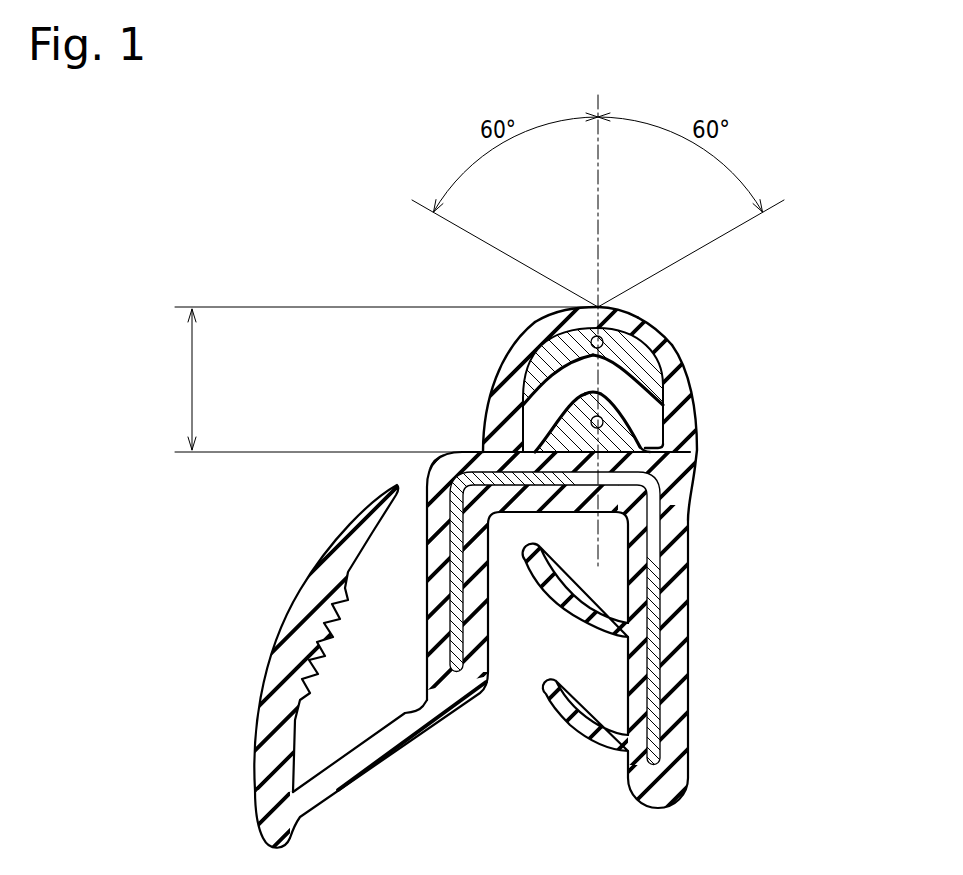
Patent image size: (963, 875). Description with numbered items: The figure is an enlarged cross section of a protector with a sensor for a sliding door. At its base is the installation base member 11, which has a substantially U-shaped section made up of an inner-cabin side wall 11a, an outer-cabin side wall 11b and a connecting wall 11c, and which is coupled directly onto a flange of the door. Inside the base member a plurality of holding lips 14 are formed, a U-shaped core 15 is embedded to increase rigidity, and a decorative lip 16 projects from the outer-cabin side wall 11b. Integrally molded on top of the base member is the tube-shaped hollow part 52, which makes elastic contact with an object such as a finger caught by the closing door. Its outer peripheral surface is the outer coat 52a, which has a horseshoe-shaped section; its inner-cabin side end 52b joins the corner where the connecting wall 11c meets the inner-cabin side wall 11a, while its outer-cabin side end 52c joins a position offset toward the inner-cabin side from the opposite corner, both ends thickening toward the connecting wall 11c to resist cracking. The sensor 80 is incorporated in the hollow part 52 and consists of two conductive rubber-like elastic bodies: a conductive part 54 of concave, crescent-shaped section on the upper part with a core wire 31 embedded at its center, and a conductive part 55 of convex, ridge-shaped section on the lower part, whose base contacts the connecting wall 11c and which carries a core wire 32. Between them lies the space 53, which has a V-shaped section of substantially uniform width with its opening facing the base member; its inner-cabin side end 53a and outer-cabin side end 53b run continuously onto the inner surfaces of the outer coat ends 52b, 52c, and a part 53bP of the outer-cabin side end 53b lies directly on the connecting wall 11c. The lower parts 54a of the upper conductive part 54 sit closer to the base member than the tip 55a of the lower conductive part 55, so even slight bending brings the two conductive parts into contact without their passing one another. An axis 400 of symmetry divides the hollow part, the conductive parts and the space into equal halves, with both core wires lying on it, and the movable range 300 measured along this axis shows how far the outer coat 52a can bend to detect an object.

The installation base member 11 is at (688, 697).
The inner-cabin side wall 11a is at (688, 590).
The outer-cabin side wall 11b is at (427, 590).
The connecting wall 11c is at (452, 458).
The holding lips 14 is at (545, 592).
The core 15 is at (427, 513).
The decorative lip 16 is at (287, 607).
The core wire 31 is at (638, 320).
The core wire 32 is at (660, 402).
The hollow part 52 is at (667, 352).
The outer coat 52a is at (527, 328).
The inner-cabin side end 52b is at (679, 478).
The outer-cabin side end 52c is at (497, 436).
The space 53 is at (555, 352).
The inner-cabin side end 53a is at (668, 447).
The outer-cabin side end 53b is at (522, 440).
The part of the outer-cabin side end 53bP is at (527, 447).
The conductive part 54 is at (547, 322).
The lower parts 54a is at (503, 412).
The conductive part 55 is at (648, 441).
The tip 55a is at (670, 375).
The sensor 80 is at (656, 340).
The movable range 300 is at (371, 379).
The axis of symmetry 400 is at (603, 179).